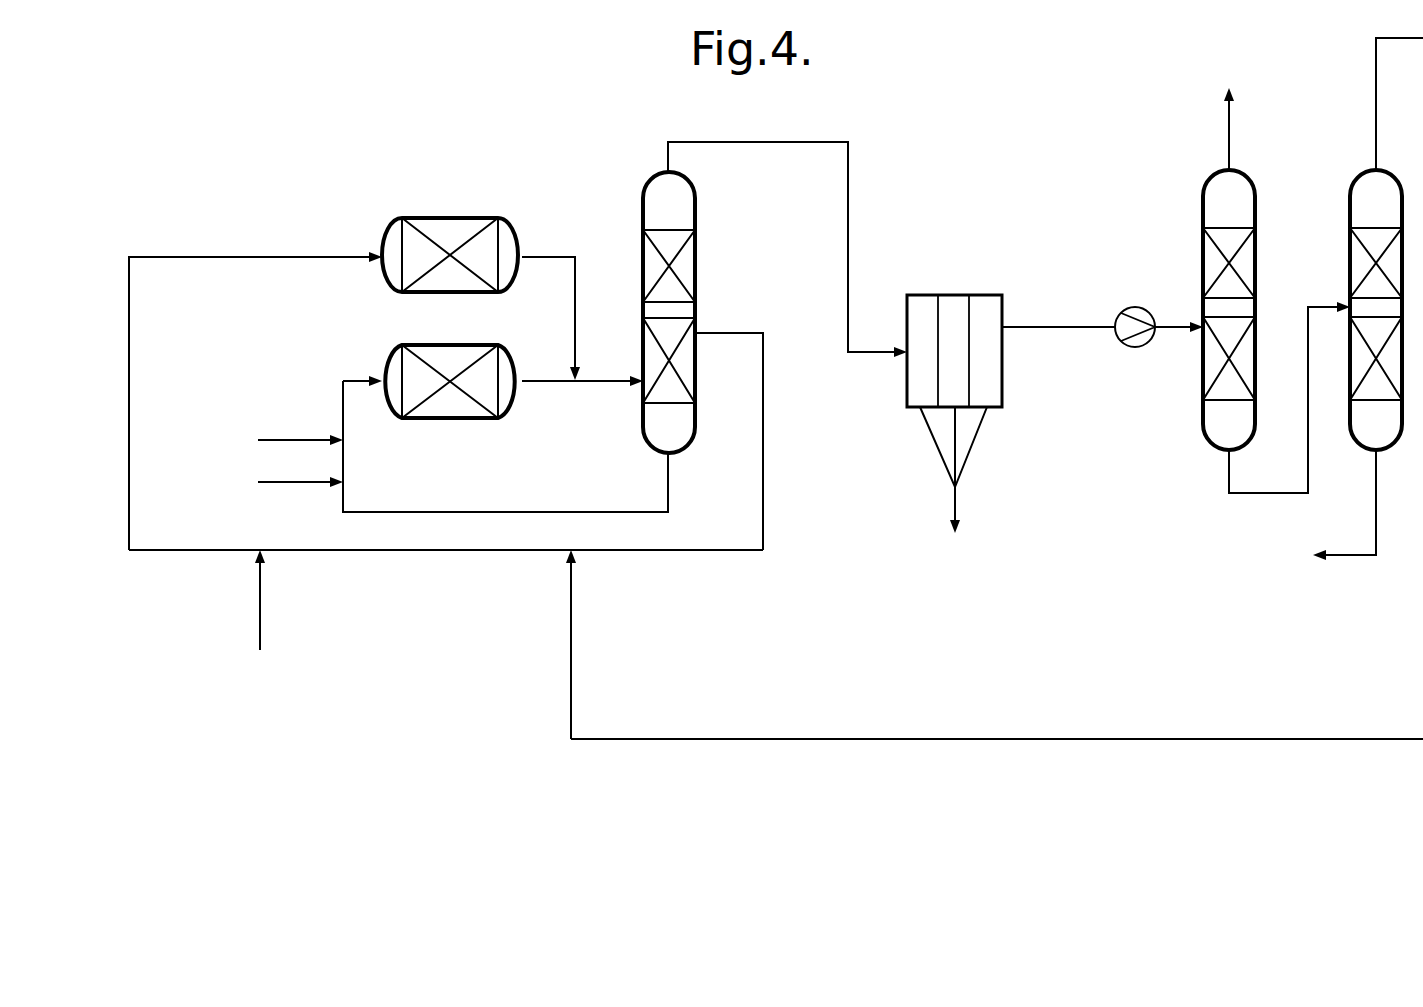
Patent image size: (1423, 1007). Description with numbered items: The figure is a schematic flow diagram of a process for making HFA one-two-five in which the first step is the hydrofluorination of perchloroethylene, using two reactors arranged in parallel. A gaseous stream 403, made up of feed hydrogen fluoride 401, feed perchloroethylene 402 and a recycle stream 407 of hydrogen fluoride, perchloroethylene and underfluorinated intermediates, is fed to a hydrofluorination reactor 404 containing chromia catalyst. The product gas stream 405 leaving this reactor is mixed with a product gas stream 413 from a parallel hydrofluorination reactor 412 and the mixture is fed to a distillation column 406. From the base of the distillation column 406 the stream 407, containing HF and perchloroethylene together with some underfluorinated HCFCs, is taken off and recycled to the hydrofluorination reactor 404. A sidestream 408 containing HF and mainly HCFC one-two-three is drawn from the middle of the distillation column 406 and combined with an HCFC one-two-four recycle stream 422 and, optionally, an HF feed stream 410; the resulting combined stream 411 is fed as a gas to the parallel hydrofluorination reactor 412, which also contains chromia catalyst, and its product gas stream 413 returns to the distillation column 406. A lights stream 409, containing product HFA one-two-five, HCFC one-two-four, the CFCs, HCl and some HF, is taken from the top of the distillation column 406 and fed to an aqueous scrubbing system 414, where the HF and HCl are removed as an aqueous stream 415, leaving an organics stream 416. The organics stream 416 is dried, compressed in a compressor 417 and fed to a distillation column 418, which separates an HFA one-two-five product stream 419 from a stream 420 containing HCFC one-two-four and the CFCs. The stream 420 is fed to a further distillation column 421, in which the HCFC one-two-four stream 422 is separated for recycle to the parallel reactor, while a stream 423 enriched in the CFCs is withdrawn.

The feed hydrogen fluoride 401 is at (279, 440).
The feed perchloroethylene 402 is at (278, 482).
The gaseous stream 403 is at (343, 395).
The hydrofluorination reactor 404 is at (386, 378).
The product gas stream 405 is at (545, 381).
The distillation column 406 is at (697, 222).
The base recycle stream 407 is at (668, 496).
The sidestream 408 is at (737, 333).
The lights stream 409 is at (690, 142).
The HF feed stream 410 is at (260, 615).
The combined stream 411 is at (235, 257).
The parallel hydrofluorination reactor 412 is at (448, 218).
The product gas stream 413 is at (546, 257).
The aqueous scrubbing system 414 is at (958, 295).
The aqueous stream 415 is at (975, 447).
The organics stream 416 is at (1039, 327).
The compressor 417 is at (1138, 343).
The distillation column 418 is at (1203, 426).
The HFA 125 stream 419 is at (1229, 140).
The HCFC 124 and CFC stream 420 is at (1229, 478).
The distillation column 421 is at (1352, 190).
The HCFC 124 stream 422 is at (1374, 98).
The CFC-enriched stream 423 is at (1376, 530).